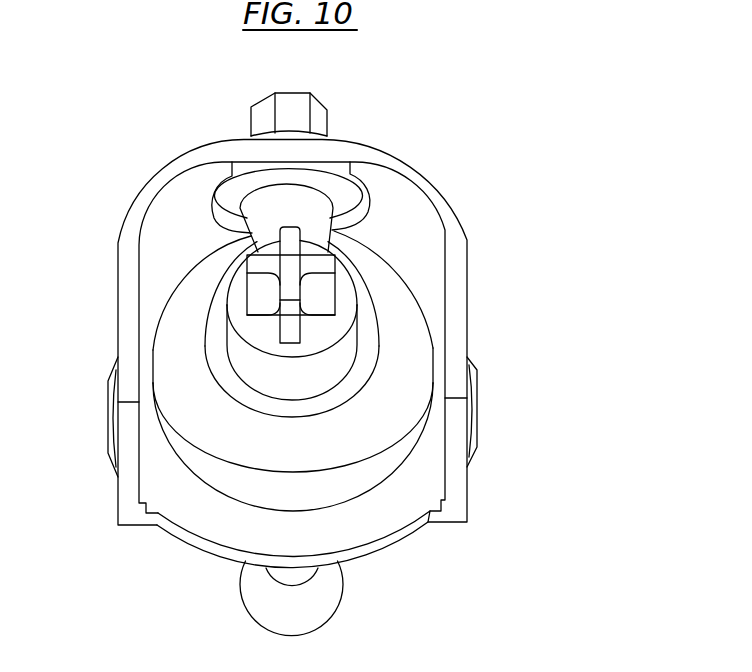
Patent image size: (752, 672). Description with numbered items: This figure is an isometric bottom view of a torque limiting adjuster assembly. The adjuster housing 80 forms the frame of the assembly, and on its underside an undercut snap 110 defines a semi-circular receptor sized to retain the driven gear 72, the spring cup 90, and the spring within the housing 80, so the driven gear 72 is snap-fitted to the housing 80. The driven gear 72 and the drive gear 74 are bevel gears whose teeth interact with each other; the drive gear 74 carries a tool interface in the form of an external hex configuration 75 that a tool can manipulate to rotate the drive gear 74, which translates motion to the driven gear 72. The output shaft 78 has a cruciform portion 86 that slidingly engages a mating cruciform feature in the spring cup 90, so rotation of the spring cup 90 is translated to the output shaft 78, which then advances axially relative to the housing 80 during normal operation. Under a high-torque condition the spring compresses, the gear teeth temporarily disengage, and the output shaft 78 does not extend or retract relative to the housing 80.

The driven gear 72 is at (353, 482).
The drive gear 74 is at (325, 217).
The external hex configuration 75 is at (317, 103).
The output shaft 78 is at (307, 578).
The adjuster housing 80 is at (445, 227).
The cruciform portion 86 is at (253, 263).
The spring cup 90 is at (322, 330).
The undercut snap 110 is at (430, 373).